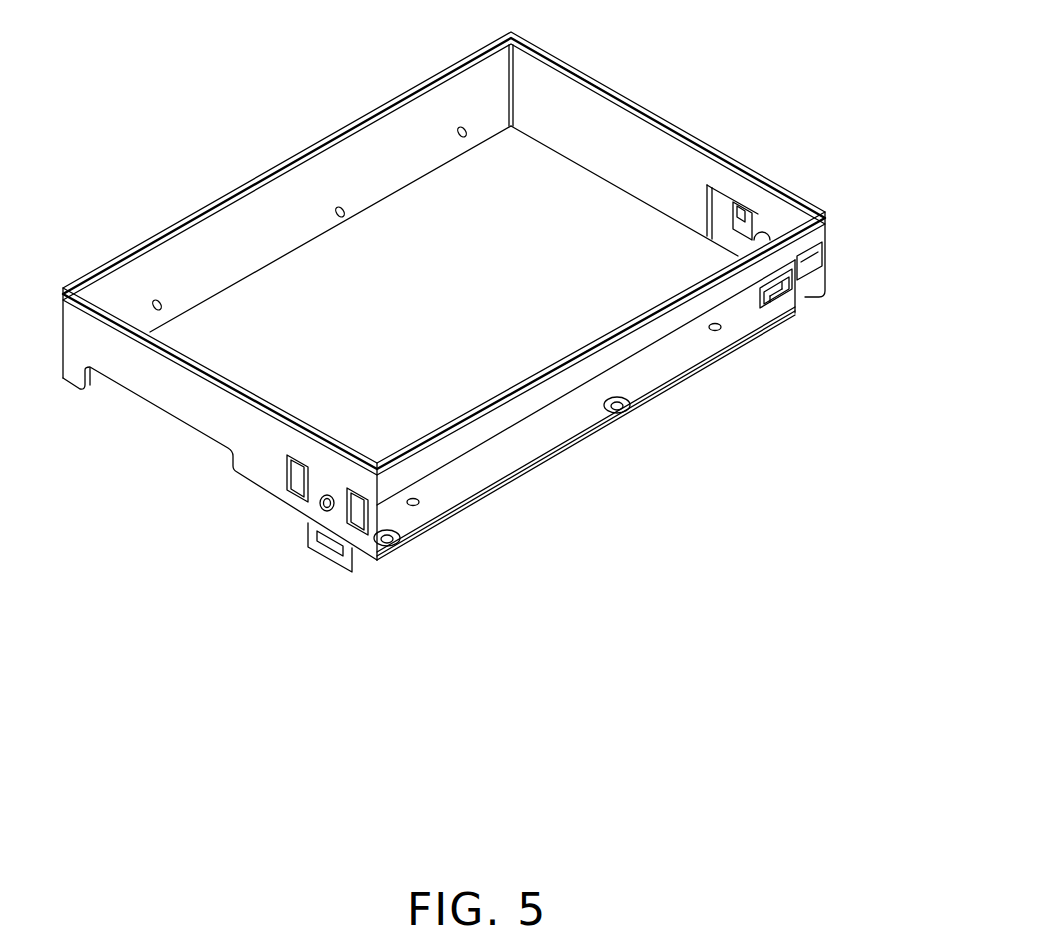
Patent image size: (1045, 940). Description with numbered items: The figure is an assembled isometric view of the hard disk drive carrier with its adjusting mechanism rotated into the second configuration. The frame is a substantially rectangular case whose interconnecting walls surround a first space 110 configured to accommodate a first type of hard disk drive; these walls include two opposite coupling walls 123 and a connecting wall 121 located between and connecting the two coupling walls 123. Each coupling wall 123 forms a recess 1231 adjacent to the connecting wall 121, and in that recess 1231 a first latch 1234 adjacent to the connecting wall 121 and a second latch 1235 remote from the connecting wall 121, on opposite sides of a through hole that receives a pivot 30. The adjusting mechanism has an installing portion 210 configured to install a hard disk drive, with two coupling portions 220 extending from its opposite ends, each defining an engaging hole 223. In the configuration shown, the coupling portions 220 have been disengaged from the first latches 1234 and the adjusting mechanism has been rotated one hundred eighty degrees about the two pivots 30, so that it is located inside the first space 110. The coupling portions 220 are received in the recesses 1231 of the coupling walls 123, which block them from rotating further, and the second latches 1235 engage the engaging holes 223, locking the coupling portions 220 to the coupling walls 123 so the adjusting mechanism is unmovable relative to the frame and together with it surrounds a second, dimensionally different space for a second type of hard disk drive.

The first space 110 is at (398, 228).
The coupling wall 123 is at (581, 75).
The second latch 1235 is at (706, 184).
The recess 1231 is at (760, 223).
The first latch 1234 is at (826, 272).
The installing portion 210 is at (650, 380).
The connecting wall 121 is at (498, 438).
The coupling portion 220 is at (795, 300).
The engaging hole 223 is at (766, 302).
The pivot 30 is at (323, 507).